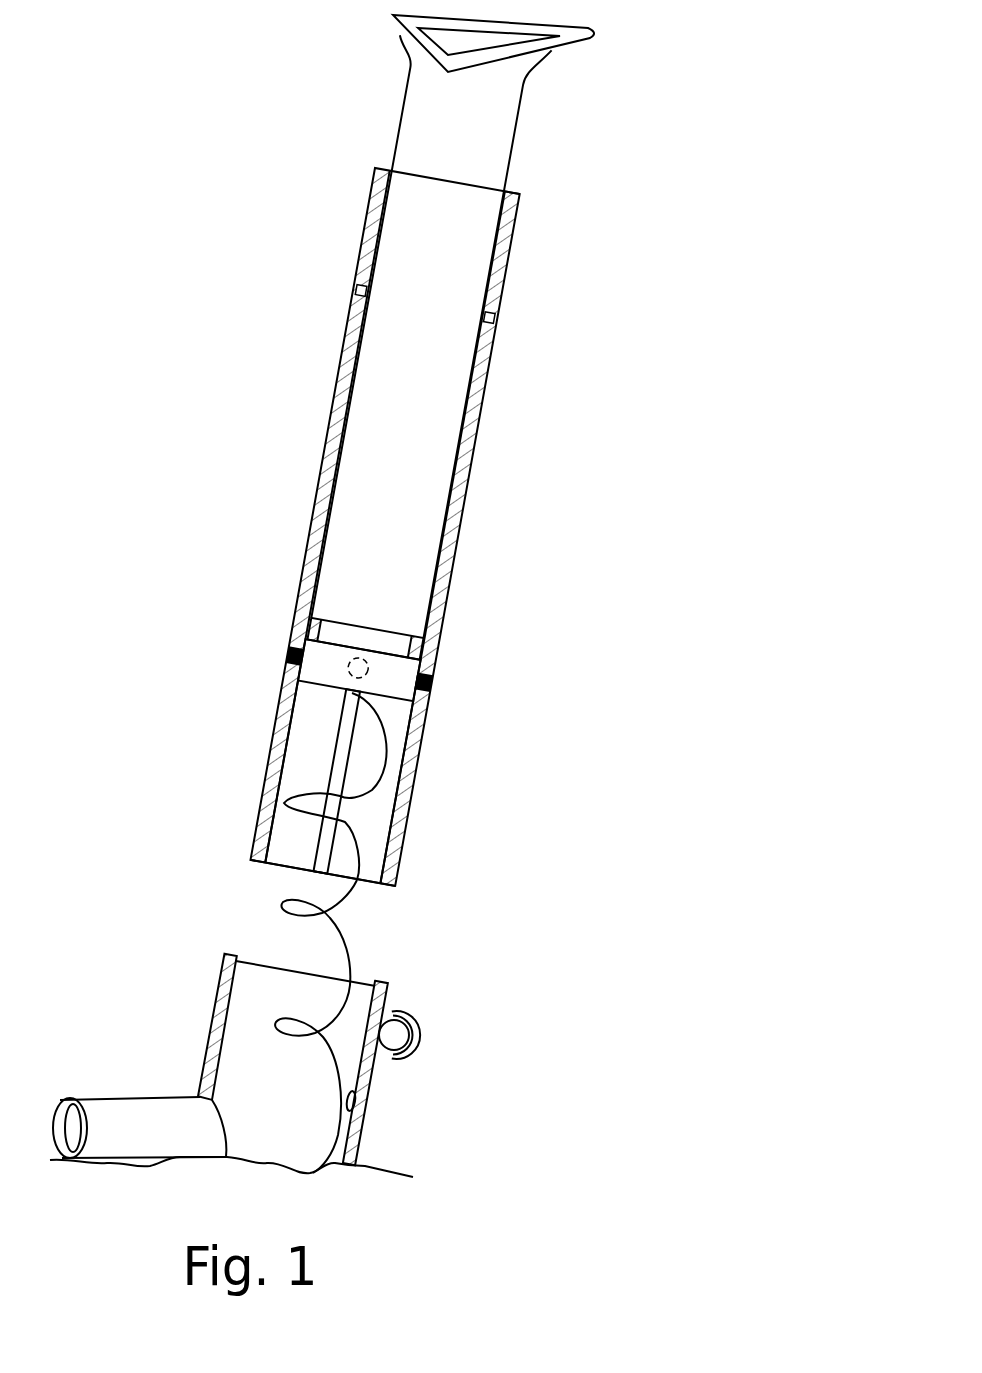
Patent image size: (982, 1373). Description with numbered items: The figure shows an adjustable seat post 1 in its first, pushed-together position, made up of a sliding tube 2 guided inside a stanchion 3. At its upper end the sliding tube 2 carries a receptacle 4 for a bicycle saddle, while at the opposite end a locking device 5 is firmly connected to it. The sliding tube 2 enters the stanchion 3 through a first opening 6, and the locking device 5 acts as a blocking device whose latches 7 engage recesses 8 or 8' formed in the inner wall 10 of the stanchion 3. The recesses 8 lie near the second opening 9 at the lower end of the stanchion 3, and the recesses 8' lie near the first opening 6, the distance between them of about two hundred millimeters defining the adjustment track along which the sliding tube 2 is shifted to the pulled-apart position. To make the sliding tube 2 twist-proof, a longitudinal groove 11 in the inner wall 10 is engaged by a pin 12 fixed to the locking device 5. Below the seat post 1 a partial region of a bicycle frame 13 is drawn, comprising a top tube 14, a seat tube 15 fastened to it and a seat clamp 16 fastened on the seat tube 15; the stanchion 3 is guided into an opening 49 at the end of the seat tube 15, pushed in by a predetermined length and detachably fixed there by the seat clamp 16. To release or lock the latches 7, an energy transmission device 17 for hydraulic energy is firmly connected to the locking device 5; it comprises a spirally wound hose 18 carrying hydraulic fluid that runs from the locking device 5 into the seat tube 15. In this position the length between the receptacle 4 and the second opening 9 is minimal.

The adjustable seat post 1 is at (612, 377).
The sliding tube 2 is at (422, 421).
The stanchion 3 is at (477, 400).
The receptacle 4 is at (594, 36).
The locking device 5 is at (397, 690).
The first opening 6 is at (490, 212).
The latches 7 is at (432, 683).
The recesses 8 is at (238, 665).
The recesses 8' is at (368, 338).
The second opening 9 is at (250, 852).
The inner wall 10 is at (390, 743).
The groove 11 is at (327, 830).
The pin 12 is at (345, 665).
The bicycle frame 13 is at (551, 1155).
The top tube 14 is at (163, 1146).
The seat tube 15 is at (212, 1022).
The seat clamp 16 is at (427, 1053).
The energy transmission device 17 is at (367, 797).
The hose 18 is at (340, 937).
The opening 49 is at (357, 1105).